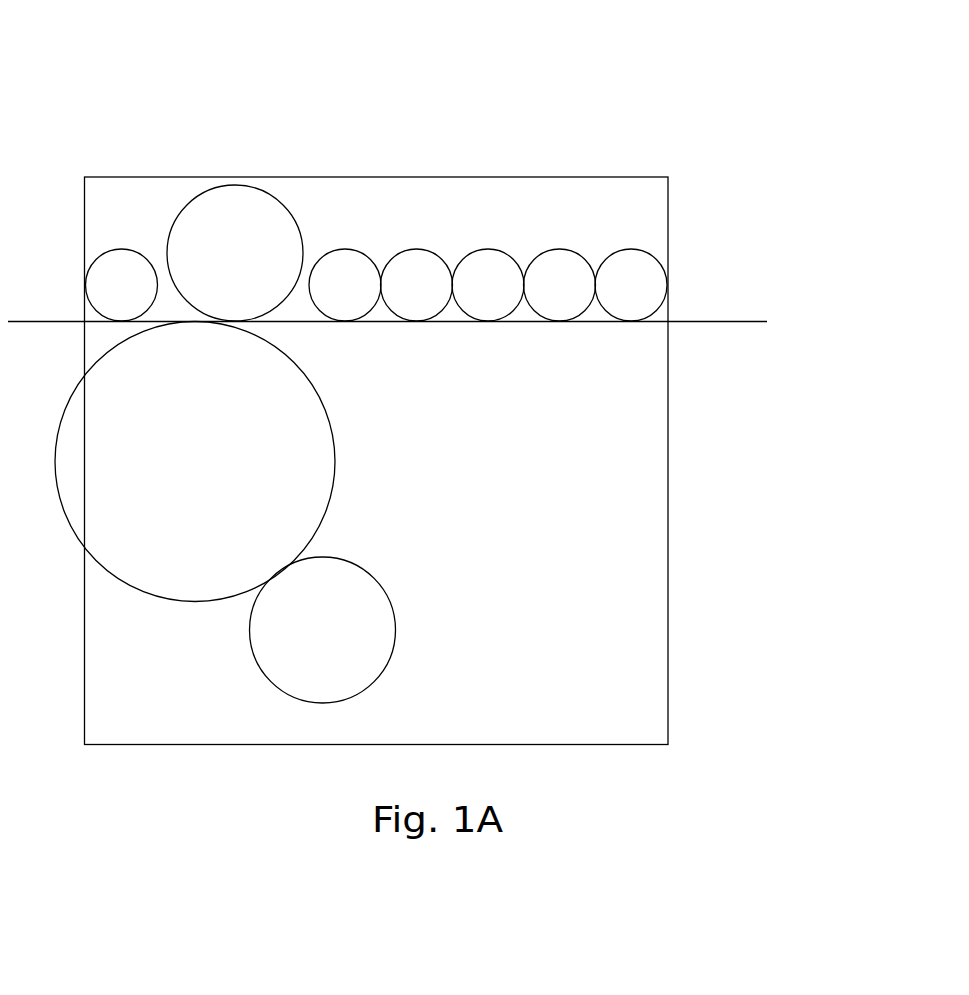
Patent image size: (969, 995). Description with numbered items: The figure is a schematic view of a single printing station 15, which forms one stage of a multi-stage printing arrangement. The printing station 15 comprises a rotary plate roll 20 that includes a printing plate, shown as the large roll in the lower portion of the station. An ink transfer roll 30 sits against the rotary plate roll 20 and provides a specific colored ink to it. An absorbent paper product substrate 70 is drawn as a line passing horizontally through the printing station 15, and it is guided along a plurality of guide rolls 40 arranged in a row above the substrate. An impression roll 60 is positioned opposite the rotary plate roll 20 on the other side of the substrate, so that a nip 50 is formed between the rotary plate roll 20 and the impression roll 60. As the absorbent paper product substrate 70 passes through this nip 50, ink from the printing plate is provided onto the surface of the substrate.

The printing station 15 is at (684, 120).
The rotary plate roll 20 is at (333, 495).
The ink transfer roll 30 is at (397, 646).
The guide rolls 40 is at (415, 250).
The nip 50 is at (218, 323).
The impression roll 60 is at (281, 202).
The absorbent paper product substrate 70 is at (710, 323).